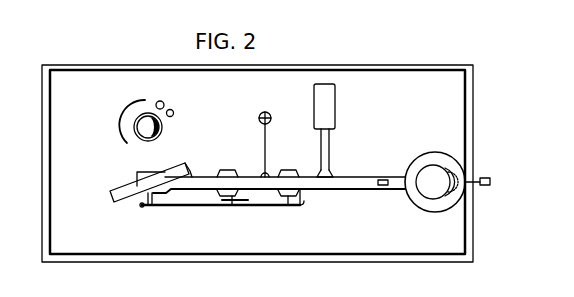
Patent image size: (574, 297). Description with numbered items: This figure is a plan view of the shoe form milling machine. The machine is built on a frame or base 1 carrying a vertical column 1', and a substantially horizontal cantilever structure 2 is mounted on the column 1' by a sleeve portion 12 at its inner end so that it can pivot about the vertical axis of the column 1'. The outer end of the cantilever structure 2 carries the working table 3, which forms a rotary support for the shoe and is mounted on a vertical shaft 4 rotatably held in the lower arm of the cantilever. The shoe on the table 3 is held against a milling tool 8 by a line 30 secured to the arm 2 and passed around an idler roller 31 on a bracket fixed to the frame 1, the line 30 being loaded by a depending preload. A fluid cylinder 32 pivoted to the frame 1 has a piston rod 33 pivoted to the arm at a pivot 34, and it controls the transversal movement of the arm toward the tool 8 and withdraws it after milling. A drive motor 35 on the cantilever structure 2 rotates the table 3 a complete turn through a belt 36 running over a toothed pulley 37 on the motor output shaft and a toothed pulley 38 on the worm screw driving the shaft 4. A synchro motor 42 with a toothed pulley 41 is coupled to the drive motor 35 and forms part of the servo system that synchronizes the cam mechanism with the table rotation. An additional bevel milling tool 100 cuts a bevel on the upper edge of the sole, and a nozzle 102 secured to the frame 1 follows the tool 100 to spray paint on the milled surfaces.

The frame or base 1 is at (269, 163).
The vertical column 1' is at (481, 170).
The cantilever structure 2 is at (373, 183).
The working table 3 is at (187, 165).
The vertical shaft 4 is at (152, 172).
The milling tool 8 is at (144, 140).
The sleeve portion 12 is at (466, 210).
The line 30 is at (264, 148).
The idler roller 31 is at (271, 115).
The fluid cylinder 32 is at (336, 101).
The piston rod 33 is at (330, 145).
The pivot 34 is at (331, 173).
The drive motor 35 is at (239, 197).
The belt 36 is at (199, 206).
The toothed pulley 37 is at (229, 206).
The toothed pulley 38 is at (149, 206).
The toothed pulley 41 is at (281, 206).
The synchro motor 42 is at (303, 190).
The tool 100 is at (156, 103).
The nozzle 102 is at (173, 110).